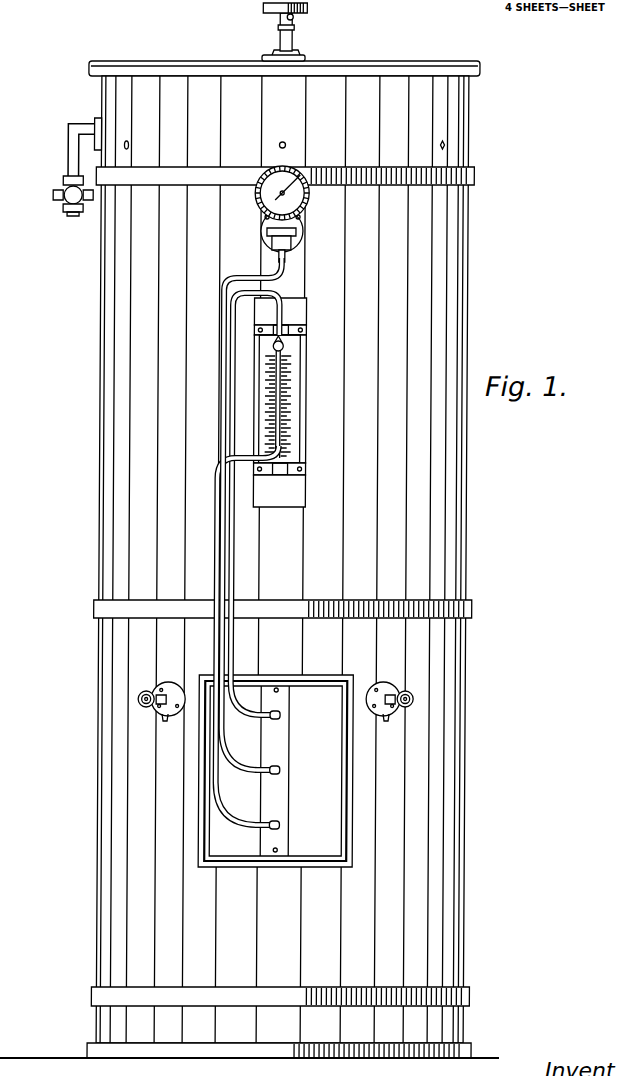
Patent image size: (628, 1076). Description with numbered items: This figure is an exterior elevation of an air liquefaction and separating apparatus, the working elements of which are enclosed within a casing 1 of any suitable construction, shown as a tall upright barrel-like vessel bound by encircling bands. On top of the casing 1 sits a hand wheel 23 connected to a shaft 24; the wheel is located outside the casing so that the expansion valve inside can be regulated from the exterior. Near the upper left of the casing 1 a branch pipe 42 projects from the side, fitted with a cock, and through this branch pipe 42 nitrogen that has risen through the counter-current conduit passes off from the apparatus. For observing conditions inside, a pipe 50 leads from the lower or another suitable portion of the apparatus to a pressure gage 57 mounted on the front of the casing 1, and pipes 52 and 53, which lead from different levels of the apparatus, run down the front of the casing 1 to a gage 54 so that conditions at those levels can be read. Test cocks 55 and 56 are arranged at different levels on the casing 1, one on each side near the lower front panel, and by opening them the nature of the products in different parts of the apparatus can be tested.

The casing 1 is at (457, 266).
The hand wheel 23 is at (265, 8).
The shaft 24 is at (296, 28).
The branch pipe 42 is at (70, 152).
The pipe 50 is at (236, 577).
The pipe 52 is at (224, 393).
The pipe 53 is at (217, 542).
The gage 54 is at (300, 433).
The test cock 55 is at (393, 716).
The test cock 56 is at (169, 716).
The pressure gauge 57 is at (309, 213).